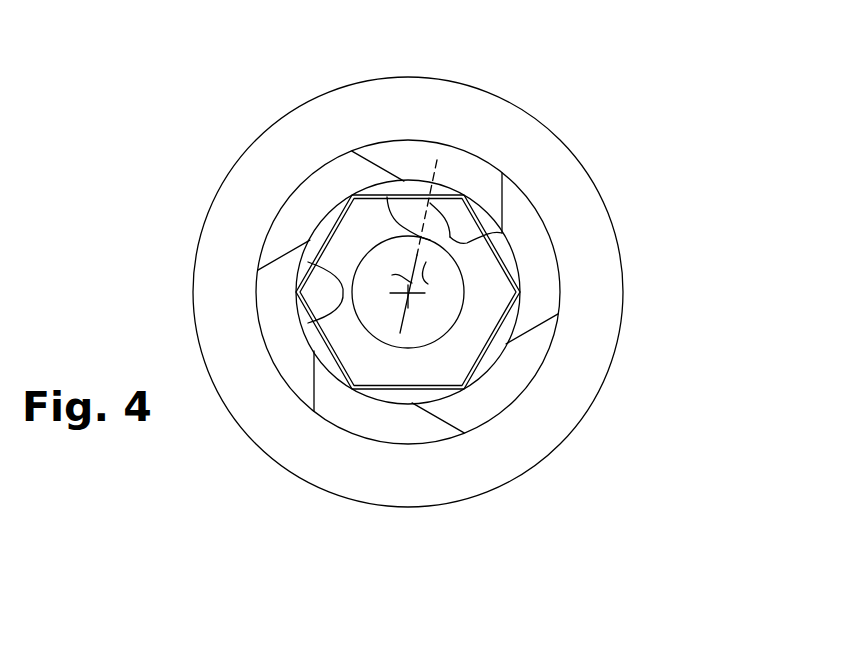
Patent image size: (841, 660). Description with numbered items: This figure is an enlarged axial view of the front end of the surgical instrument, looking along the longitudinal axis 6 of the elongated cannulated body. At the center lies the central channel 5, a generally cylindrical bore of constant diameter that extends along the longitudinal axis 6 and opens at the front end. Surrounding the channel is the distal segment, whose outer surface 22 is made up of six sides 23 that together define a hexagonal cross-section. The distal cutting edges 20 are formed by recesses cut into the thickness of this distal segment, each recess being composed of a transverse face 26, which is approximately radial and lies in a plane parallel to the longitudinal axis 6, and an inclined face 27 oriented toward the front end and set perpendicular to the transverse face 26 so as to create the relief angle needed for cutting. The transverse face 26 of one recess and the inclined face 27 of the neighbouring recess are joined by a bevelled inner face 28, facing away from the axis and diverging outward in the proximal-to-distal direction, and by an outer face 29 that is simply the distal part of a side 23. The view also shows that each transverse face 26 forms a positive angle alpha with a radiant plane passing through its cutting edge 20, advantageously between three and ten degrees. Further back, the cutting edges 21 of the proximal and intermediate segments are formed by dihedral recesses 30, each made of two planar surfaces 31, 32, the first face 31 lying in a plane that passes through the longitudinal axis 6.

The central channel 5 is at (375, 365).
The longitudinal axis 6 is at (438, 343).
The cutting edges 20 is at (464, 194).
The cutting edges 21 is at (350, 194).
The outer surface 22 is at (550, 336).
The sides 23 is at (470, 265).
The transverse face 26 is at (430, 270).
The inclined face 27 is at (343, 250).
The bevelled inner face 28 is at (485, 228).
The outer face 29 is at (302, 312).
The recesses 30 is at (297, 208).
The first face 31 is at (362, 176).
The planar surface 32 is at (503, 193).